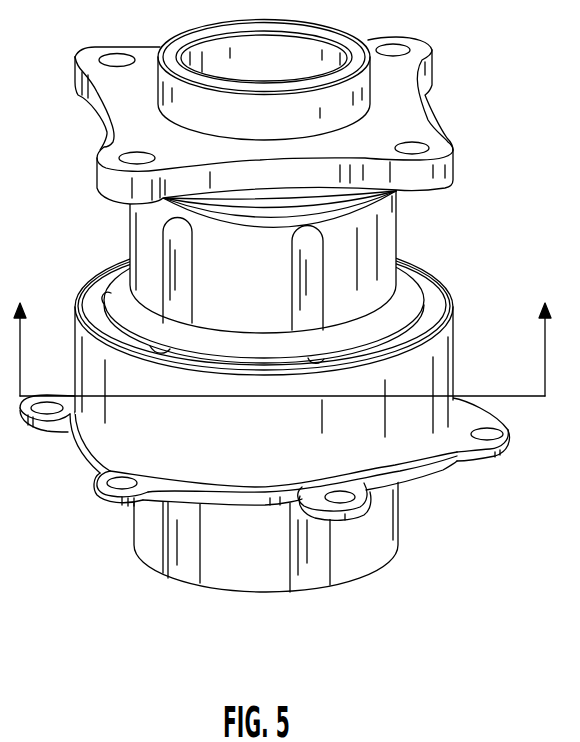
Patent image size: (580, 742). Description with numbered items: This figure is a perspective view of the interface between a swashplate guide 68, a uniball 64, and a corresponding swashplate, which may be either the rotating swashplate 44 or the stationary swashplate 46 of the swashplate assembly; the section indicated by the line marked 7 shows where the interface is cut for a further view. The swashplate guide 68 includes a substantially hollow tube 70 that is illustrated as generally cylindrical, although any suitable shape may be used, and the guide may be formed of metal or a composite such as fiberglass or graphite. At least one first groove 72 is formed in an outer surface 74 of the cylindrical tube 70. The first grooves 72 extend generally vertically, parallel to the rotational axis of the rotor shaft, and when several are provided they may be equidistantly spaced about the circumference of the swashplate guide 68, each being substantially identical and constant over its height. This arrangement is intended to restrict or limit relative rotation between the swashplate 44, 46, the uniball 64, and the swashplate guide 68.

The section line 7- 7 is at (284, 329).
The rotating swashplate 44 is at (270, 457).
The stationary swashplate 46 is at (402, 447).
The uniball 64 is at (407, 300).
The swashplate guide 68 is at (270, 343).
The hollow tube 70 is at (130, 255).
The first groove 72 is at (178, 573).
The outer surface 74 is at (240, 577).